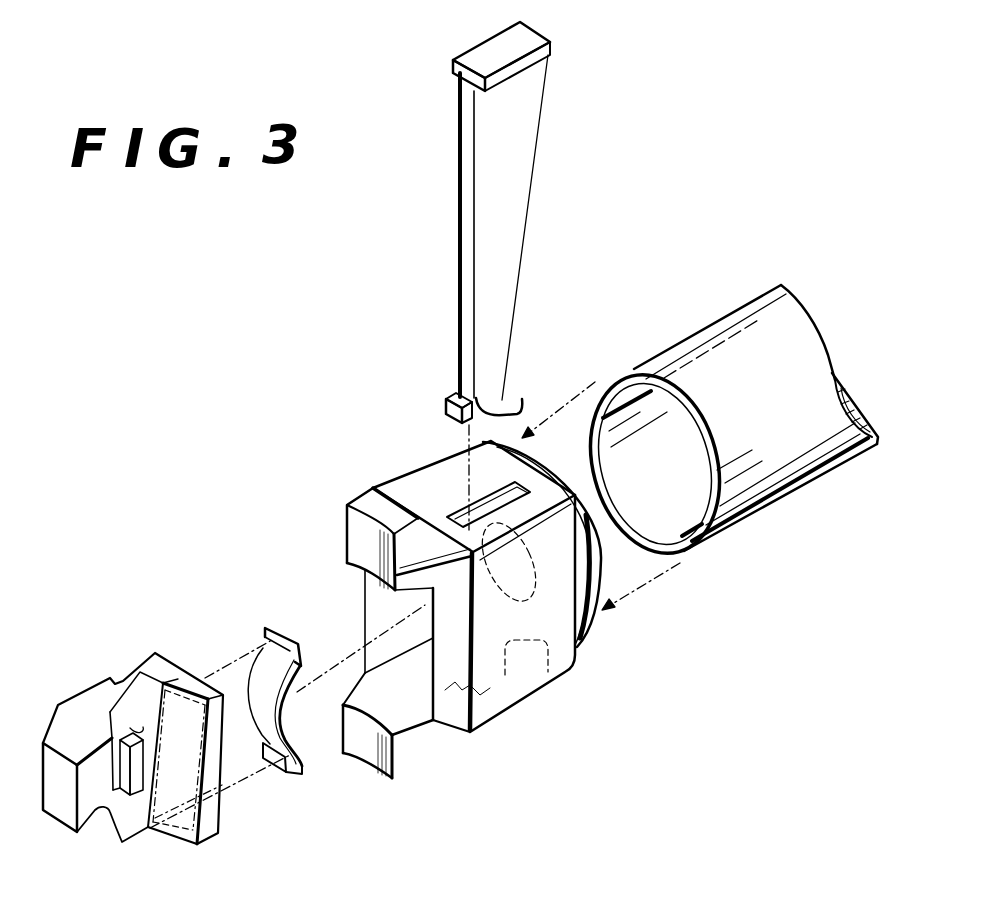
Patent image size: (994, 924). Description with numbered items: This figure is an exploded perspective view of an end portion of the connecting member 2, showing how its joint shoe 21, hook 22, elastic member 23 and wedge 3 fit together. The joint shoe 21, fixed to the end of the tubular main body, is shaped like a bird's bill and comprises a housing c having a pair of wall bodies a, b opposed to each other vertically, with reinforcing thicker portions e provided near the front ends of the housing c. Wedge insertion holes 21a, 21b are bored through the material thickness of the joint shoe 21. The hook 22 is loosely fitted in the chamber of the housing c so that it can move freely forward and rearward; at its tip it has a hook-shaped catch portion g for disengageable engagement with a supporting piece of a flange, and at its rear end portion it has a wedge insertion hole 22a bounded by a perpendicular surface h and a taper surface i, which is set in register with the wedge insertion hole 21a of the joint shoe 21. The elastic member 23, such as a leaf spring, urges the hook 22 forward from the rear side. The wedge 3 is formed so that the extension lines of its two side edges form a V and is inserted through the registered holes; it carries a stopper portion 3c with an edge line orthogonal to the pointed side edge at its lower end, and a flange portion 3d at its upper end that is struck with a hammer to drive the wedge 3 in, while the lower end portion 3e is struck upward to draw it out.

The connecting member 2 is at (740, 300).
The wedge 3 is at (486, 222).
The stopper portion 3c is at (448, 400).
The flange portion 3d is at (545, 52).
The lower end portion 3e is at (508, 396).
The joint shoe 21 is at (403, 506).
The wedge insertion hole 21a is at (543, 467).
The wedge insertion hole 21b is at (547, 685).
The hook 22 is at (152, 749).
The wedge insertion hole 22a is at (140, 707).
The elastic member 23 is at (283, 745).
The wall body a is at (370, 609).
The wall body b is at (445, 723).
The housing c is at (443, 486).
The reinforcing thicker portion e is at (348, 502).
The catch portion g is at (93, 820).
The perpendicular surface h is at (225, 792).
The taper surface i is at (177, 807).